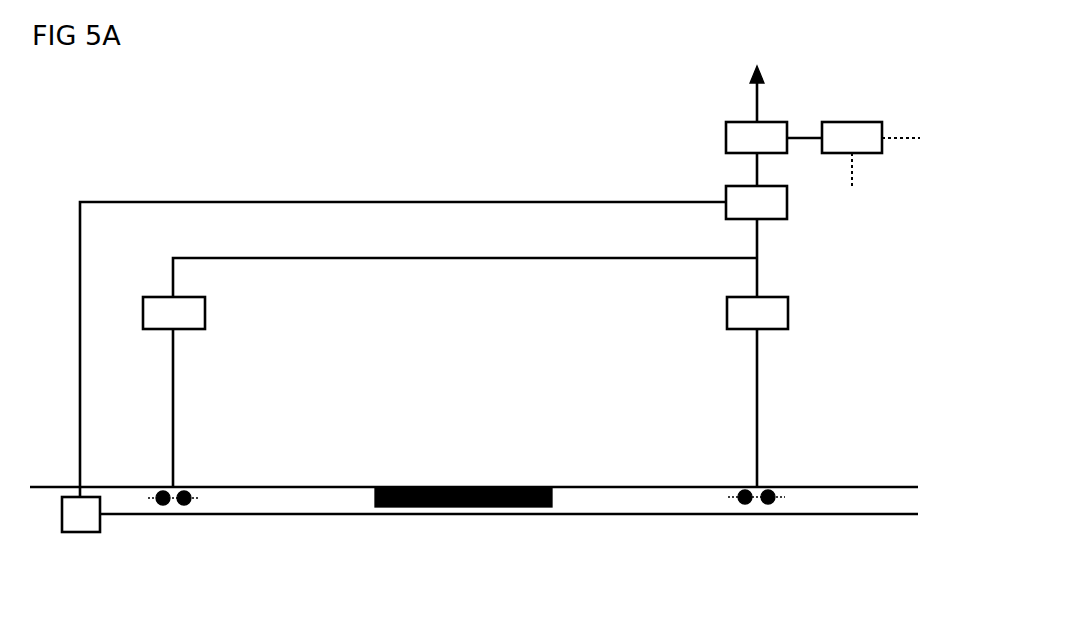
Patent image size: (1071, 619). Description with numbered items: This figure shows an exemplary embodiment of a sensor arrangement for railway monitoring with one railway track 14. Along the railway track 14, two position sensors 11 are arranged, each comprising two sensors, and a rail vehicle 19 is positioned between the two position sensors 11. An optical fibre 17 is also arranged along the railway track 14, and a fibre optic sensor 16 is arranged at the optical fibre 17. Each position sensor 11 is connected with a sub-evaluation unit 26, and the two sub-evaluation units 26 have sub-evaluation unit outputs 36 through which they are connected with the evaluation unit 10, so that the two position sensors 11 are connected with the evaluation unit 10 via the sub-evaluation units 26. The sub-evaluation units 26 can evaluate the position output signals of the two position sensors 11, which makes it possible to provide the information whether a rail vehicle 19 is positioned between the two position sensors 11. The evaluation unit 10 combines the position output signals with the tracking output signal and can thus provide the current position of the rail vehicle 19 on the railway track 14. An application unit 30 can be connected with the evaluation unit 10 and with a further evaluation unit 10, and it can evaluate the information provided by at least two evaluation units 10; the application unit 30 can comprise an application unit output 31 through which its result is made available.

The application unit output 31 is at (760, 95).
The application unit 30 is at (724, 145).
The evaluation unit 10 is at (884, 148).
The sub-evaluation unit output 36 is at (172, 268).
The sub-evaluation unit 26 is at (205, 331).
The railway track 14 is at (870, 485).
The optical fibre 17 is at (885, 517).
The fibre optic sensor 16 is at (85, 535).
The position sensor 11 is at (175, 505).
The rail vehicle 19 is at (457, 510).